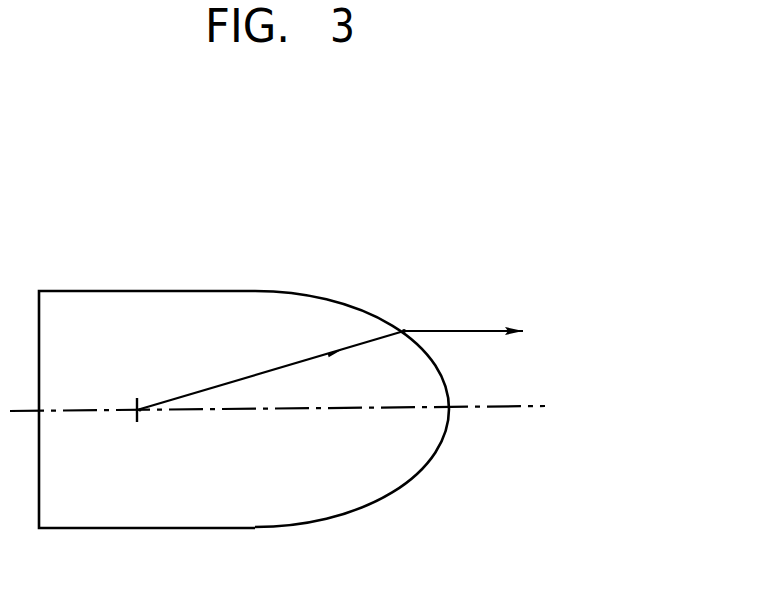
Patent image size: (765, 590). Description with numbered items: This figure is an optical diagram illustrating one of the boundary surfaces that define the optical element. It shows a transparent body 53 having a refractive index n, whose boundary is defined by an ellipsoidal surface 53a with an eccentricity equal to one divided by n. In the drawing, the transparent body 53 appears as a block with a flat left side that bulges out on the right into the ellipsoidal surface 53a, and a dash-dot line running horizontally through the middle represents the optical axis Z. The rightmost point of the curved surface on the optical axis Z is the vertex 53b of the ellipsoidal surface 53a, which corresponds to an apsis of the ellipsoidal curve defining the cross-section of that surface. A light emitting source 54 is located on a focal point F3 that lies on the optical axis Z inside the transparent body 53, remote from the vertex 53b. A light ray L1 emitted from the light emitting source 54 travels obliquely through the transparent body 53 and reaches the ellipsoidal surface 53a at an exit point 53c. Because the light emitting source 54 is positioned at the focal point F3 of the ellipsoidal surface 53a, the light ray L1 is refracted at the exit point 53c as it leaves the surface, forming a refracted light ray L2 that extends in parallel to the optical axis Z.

The transparent body 53 is at (286, 352).
The ellipsoidal surface 53a is at (325, 298).
The vertex 53b is at (450, 409).
The exit point 53c is at (405, 330).
The light emitting source 54 is at (145, 412).
The focal point F3 is at (138, 412).
The light ray L1 is at (247, 377).
The refracted light ray L2 is at (465, 328).
The optical axis Z is at (295, 402).